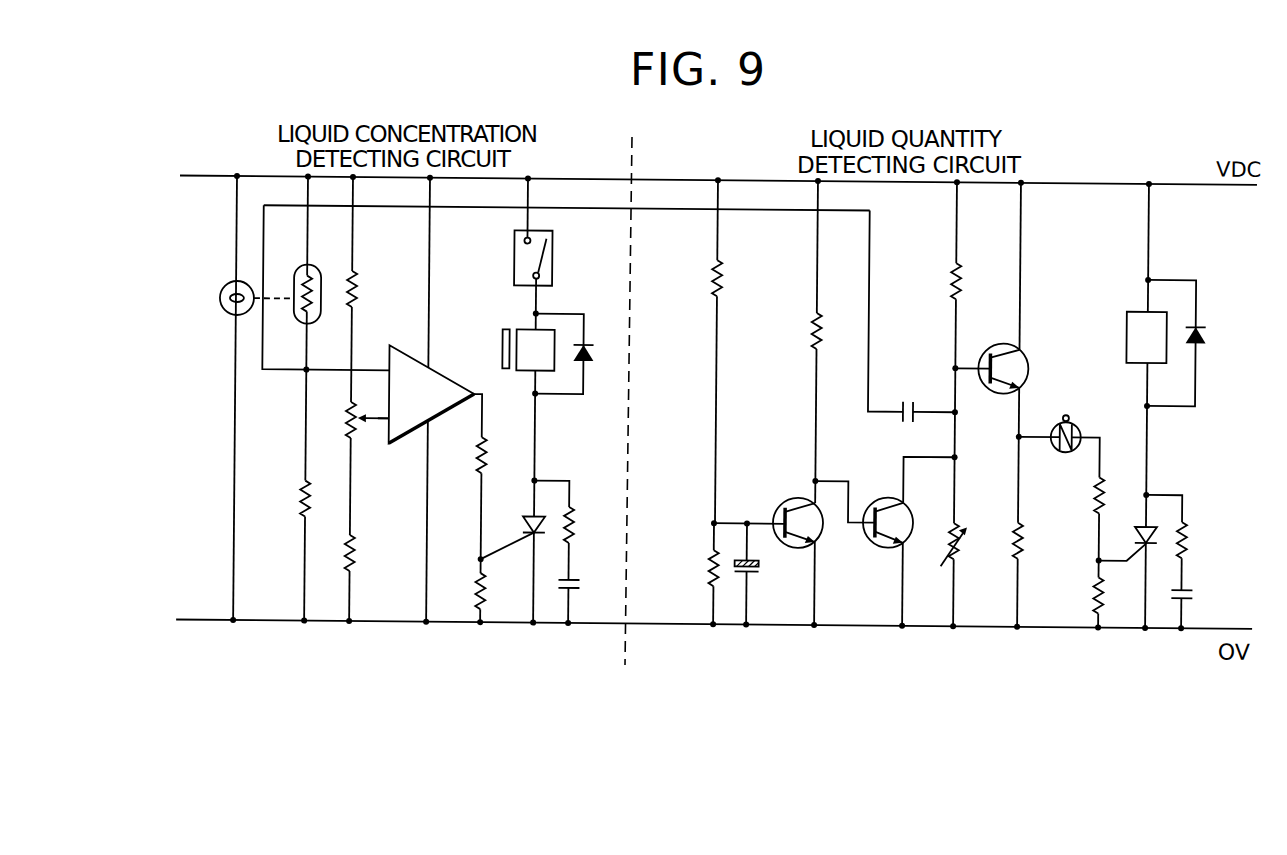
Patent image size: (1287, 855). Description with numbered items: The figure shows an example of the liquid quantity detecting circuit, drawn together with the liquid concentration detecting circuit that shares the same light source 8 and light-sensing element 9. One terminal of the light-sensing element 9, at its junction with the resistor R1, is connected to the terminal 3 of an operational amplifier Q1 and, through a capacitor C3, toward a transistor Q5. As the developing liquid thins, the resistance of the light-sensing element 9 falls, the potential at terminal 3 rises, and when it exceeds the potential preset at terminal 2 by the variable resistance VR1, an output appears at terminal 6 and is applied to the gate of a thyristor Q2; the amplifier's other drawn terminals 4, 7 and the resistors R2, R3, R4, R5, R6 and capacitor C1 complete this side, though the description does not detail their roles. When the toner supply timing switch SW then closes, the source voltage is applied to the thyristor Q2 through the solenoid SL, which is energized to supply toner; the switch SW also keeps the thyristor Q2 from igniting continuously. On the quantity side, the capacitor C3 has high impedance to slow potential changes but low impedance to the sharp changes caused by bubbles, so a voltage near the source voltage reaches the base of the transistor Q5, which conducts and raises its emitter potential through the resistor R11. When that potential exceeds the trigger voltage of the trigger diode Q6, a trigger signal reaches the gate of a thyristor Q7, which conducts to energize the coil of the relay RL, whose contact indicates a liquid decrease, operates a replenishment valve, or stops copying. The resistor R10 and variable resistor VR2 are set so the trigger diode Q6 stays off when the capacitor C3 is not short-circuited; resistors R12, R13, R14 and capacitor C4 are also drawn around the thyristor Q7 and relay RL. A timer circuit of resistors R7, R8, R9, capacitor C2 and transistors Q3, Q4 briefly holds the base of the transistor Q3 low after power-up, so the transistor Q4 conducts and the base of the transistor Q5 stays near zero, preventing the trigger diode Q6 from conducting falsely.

The light source 8 is at (224, 287).
The light-sensing element 9 is at (301, 266).
The resistor R1 is at (303, 497).
The resistor R2 is at (360, 285).
The resistor R3 is at (358, 542).
The resistor R4 is at (480, 455).
The resistor R5 is at (481, 582).
The resistor R6 is at (579, 517).
The resistor R7 is at (711, 275).
The resistor R8 is at (710, 567).
The resistor R9 is at (812, 327).
The resistor R10 is at (951, 279).
The resistor R11 is at (1027, 545).
The resistor R12 is at (1096, 486).
The resistor R13 is at (1095, 596).
The resistor R14 is at (1192, 528).
The variable resistance VR1 is at (357, 428).
The variable resistor VR2 is at (958, 534).
The operational amplifier Q1 is at (372, 399).
The thyristor Q2 is at (529, 513).
The transistor Q3 is at (790, 500).
The transistor Q4 is at (889, 497).
The transistor Q5 is at (1030, 359).
The trigger diode Q6 is at (1070, 407).
The thyristor Q7 is at (1140, 518).
The capacitor C1 is at (584, 582).
The capacitor C2 is at (765, 571).
The capacitor C3 is at (908, 395).
The capacitor C4 is at (1198, 592).
The toner supply timing switch SW is at (553, 257).
The solenoid SL is at (528, 353).
The relay RL is at (1166, 295).
The terminal 2 is at (391, 421).
The terminal 3 is at (333, 295).
The op amp pin 4 (negative supply) 4 is at (422, 513).
The terminal 6 is at (463, 410).
The op amp pin 7 (positive supply) 7 is at (423, 282).